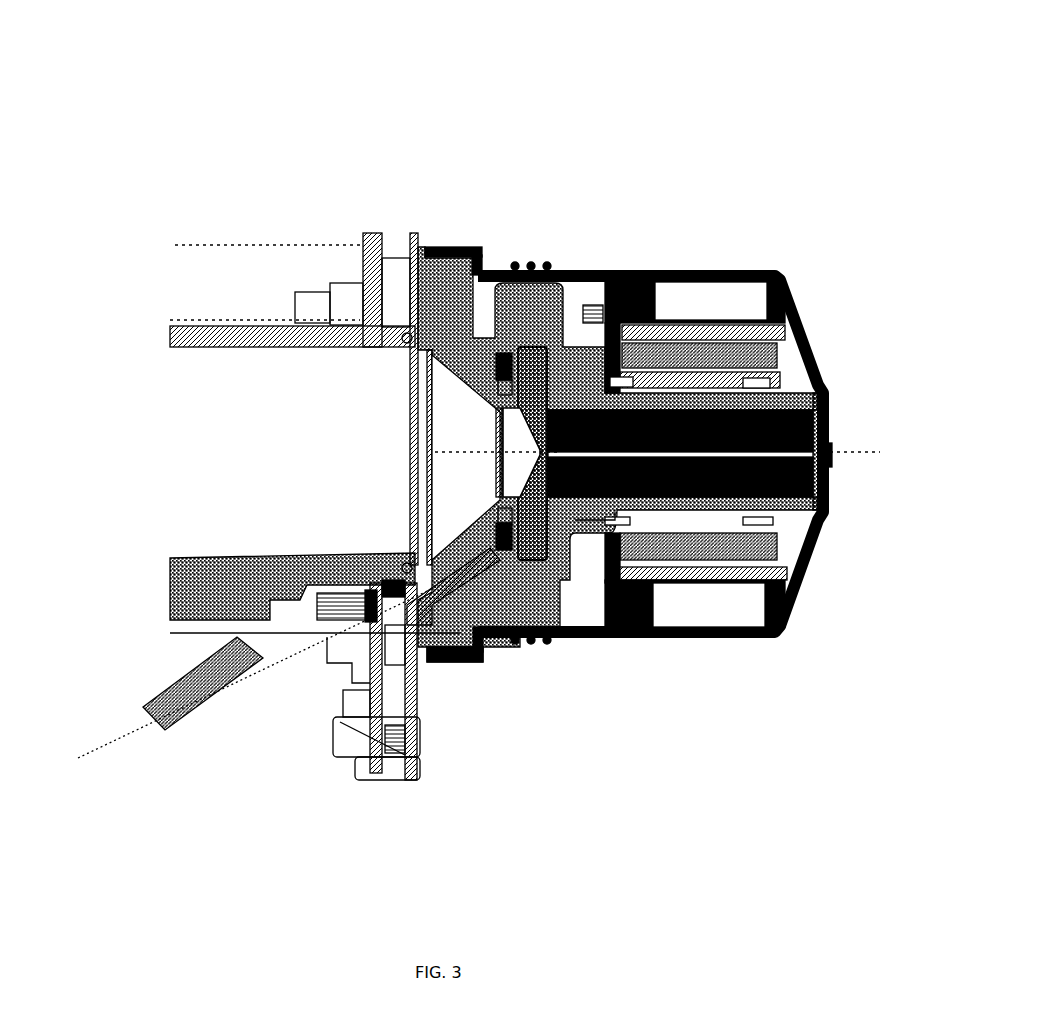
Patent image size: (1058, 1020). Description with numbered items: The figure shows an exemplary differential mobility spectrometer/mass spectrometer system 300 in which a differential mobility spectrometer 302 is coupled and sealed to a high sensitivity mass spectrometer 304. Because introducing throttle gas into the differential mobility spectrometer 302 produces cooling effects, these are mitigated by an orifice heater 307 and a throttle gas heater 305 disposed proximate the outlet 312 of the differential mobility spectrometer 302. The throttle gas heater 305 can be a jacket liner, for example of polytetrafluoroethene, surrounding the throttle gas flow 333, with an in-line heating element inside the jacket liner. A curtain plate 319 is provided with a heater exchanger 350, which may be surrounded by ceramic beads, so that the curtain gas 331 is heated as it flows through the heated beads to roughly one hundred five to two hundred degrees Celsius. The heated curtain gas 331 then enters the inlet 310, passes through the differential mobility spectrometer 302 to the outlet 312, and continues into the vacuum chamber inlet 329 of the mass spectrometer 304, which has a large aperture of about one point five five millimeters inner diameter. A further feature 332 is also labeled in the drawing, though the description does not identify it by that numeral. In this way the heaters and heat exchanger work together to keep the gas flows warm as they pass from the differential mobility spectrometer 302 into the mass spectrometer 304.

The differential mobility spectrometer/mass spectrometer system 300 is at (547, 122).
The differential mobility spectrometer 302 is at (810, 264).
The mass spectrometer 304 is at (184, 202).
The throttle gas heater 305 is at (168, 683).
The orifice heater 307 is at (512, 335).
The inlet 310 is at (805, 453).
The outlet 312 is at (548, 452).
The curtain plate 319 is at (614, 287).
The vacuum chamber inlet 329 is at (548, 453).
The curtain gas 331 is at (748, 562).
The housing flange step 332 is at (470, 662).
The throttle gas flow 333 is at (235, 690).
The heater exchanger 350 is at (775, 345).